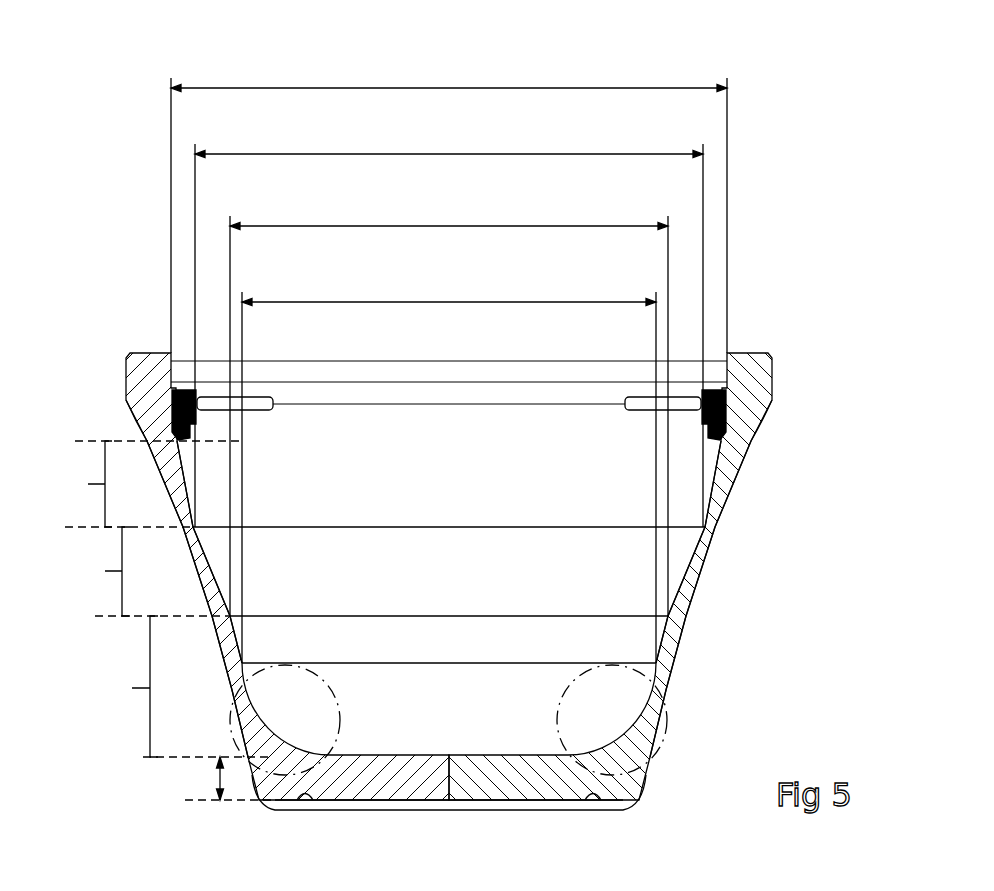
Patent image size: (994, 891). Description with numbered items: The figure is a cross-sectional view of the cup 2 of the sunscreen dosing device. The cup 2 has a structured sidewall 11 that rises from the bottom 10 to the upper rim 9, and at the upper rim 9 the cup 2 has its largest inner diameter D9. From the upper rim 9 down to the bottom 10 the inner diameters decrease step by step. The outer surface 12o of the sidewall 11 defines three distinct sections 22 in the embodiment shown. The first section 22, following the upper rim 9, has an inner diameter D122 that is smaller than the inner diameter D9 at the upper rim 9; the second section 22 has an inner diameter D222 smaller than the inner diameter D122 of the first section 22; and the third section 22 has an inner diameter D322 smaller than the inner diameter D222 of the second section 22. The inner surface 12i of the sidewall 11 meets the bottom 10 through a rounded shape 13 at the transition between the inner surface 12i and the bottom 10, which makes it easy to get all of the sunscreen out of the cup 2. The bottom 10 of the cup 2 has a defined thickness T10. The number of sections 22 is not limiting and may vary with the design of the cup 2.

The cup 2 is at (429, 434).
The upper rim 9 is at (752, 353).
The bottom 10 is at (553, 783).
The sidewall 11 is at (695, 576).
The inner surface 12i is at (686, 543).
The outer surface 12o is at (695, 630).
The rounded shape 13 is at (285, 716).
The section 22 is at (380, 477).
The inner diameter at the upper rim D9 is at (296, 88).
The inner diameter of the first section D122 is at (381, 154).
The inner diameter of the second section D222 is at (464, 226).
The inner diameter of the third section D322 is at (555, 302).
The thickness of the bottom T10 is at (220, 779).